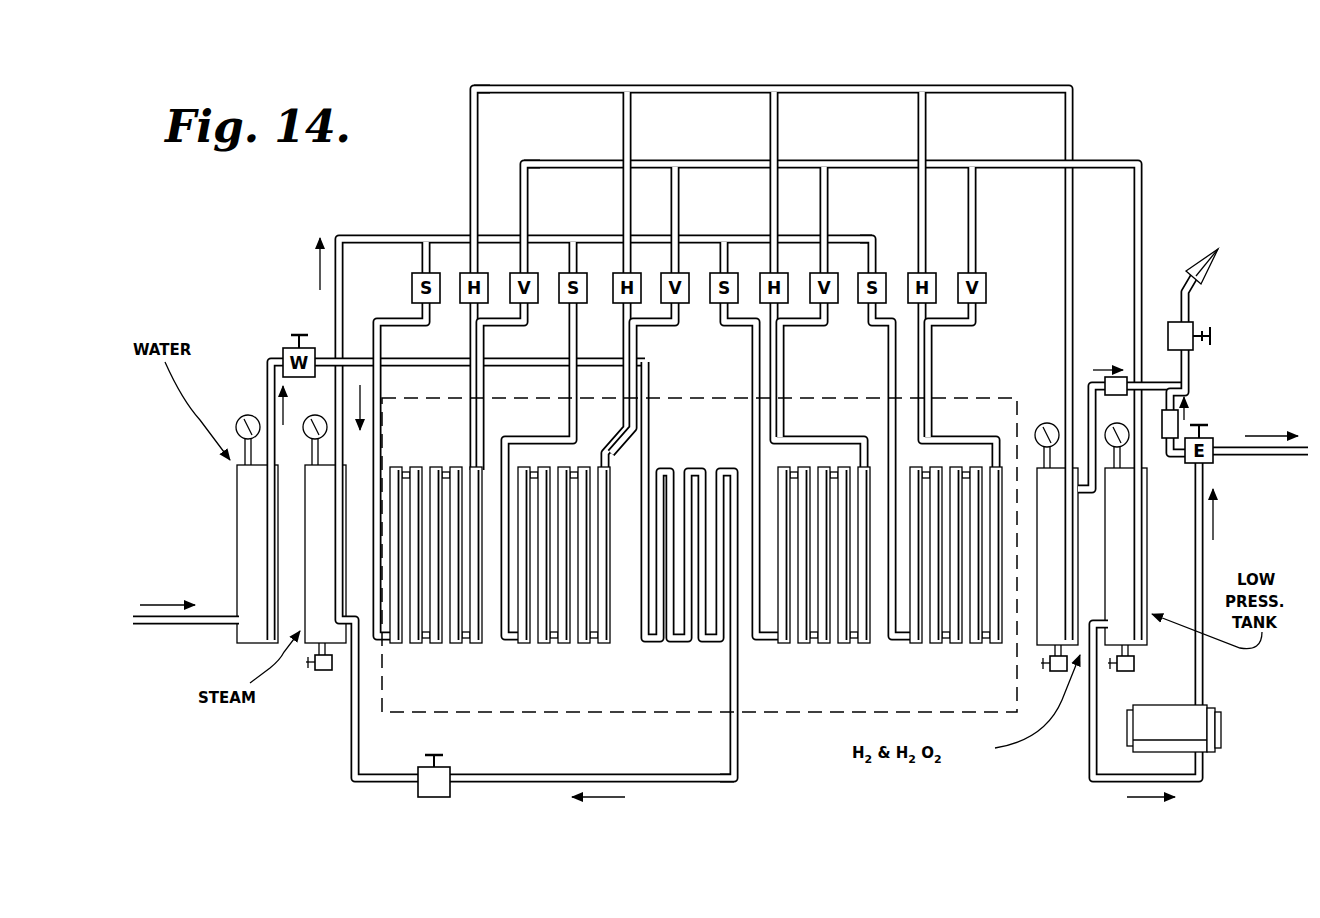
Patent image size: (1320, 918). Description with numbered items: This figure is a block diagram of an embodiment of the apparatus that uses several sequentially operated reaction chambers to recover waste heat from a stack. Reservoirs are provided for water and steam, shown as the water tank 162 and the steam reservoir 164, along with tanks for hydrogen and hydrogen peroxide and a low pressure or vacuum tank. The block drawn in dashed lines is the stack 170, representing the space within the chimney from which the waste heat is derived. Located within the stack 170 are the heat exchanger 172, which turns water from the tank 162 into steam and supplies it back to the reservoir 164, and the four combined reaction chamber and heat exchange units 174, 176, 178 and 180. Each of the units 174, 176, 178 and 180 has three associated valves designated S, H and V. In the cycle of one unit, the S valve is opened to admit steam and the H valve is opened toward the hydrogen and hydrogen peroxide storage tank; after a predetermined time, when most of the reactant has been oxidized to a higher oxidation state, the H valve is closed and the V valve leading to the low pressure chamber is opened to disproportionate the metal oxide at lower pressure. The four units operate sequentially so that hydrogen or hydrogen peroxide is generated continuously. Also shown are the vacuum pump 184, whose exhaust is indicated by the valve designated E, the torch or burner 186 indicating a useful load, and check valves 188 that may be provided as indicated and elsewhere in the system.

The water reservoir 162 is at (252, 507).
The steam reservoir 164 is at (325, 569).
The stack 170 is at (796, 714).
The heat exchanger 172 is at (700, 452).
The combined reaction chamber and heat exchange unit 174 is at (427, 453).
The combined reaction chamber and heat exchange unit 176 is at (553, 462).
The combined reaction chamber and heat exchange unit 178 is at (836, 455).
The combined reaction chamber and heat exchange unit 180 is at (974, 455).
The vacuum pump 184 is at (1130, 738).
The torch or burner 186 is at (1220, 258).
The check valve 188 is at (1115, 377).